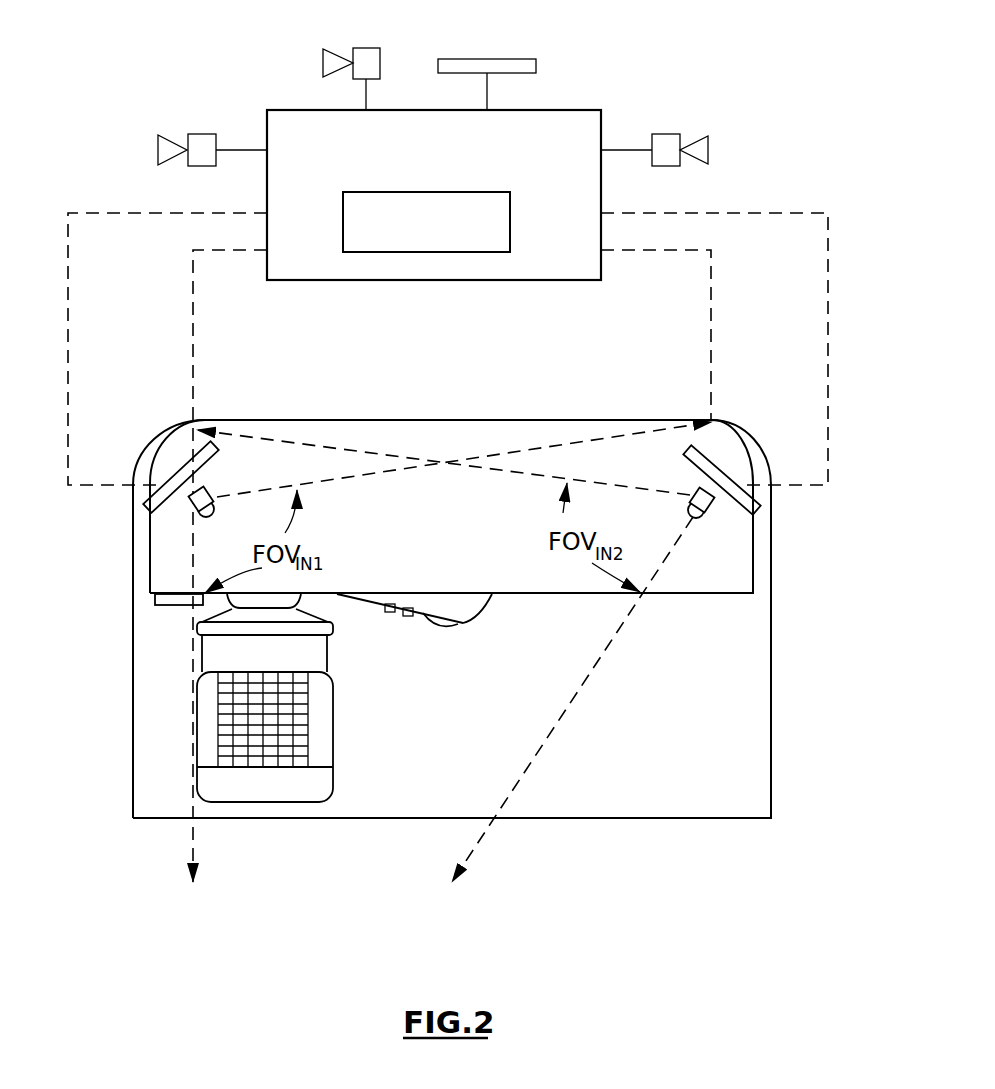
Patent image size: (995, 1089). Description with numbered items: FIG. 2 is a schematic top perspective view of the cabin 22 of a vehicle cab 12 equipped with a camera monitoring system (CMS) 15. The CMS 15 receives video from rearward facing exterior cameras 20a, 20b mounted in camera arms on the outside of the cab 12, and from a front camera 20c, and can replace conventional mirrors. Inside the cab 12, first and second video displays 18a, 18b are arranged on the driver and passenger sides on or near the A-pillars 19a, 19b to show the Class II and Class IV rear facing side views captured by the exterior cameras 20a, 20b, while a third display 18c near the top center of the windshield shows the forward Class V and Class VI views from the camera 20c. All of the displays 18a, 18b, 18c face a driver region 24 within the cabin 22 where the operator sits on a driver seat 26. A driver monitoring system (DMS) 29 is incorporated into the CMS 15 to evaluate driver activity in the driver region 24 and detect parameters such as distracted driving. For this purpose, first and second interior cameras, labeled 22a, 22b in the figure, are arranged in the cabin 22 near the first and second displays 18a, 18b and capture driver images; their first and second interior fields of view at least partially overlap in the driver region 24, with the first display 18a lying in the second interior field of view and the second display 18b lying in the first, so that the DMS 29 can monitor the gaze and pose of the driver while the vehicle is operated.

The vehicle cab 12 is at (572, 383).
The camera monitoring system (CMS) 15 is at (601, 122).
The first video display 18a is at (183, 455).
The second video display 18b is at (720, 463).
The third display 18c is at (525, 59).
The A-pillar 19a is at (147, 457).
The A-pillar 19b is at (750, 457).
The exterior camera 20a is at (197, 134).
The exterior camera 20b is at (668, 134).
The camera 20c is at (363, 48).
The vehicle cabin 22 is at (670, 747).
The first interior camera 22a is at (220, 487).
The second interior camera 22b is at (692, 485).
The driver region 24 is at (316, 698).
The driver seat 26 is at (304, 719).
The driver monitoring system (DMS) 29 is at (390, 252).